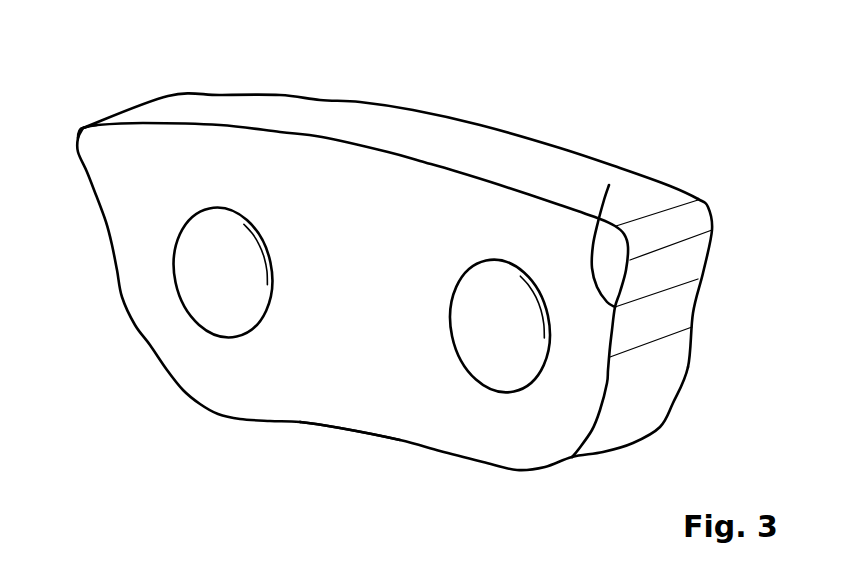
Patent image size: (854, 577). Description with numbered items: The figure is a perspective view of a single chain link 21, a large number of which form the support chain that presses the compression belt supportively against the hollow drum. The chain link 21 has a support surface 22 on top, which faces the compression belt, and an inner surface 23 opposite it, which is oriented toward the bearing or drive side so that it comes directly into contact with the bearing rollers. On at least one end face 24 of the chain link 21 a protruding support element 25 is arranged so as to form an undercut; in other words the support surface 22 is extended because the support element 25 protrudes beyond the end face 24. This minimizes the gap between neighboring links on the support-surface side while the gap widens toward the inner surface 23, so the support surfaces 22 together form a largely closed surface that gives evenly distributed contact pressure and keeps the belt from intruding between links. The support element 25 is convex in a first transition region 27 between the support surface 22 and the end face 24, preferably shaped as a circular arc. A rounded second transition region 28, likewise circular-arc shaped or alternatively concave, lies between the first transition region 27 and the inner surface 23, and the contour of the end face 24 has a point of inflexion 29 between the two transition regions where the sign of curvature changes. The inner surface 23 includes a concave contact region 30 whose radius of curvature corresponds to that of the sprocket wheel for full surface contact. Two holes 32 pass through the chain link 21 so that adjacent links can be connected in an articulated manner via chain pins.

The chain link 21 is at (644, 87).
The support surface 22 is at (413, 123).
The inner surface 23 is at (293, 422).
The end face 24 is at (118, 276).
The support element 25 is at (76, 137).
The first transition region 27 is at (740, 247).
The second transition region 28 is at (673, 403).
The point of inflexion 29 is at (609, 185).
The concave contact region 30 is at (340, 428).
The holes 32 is at (233, 448).